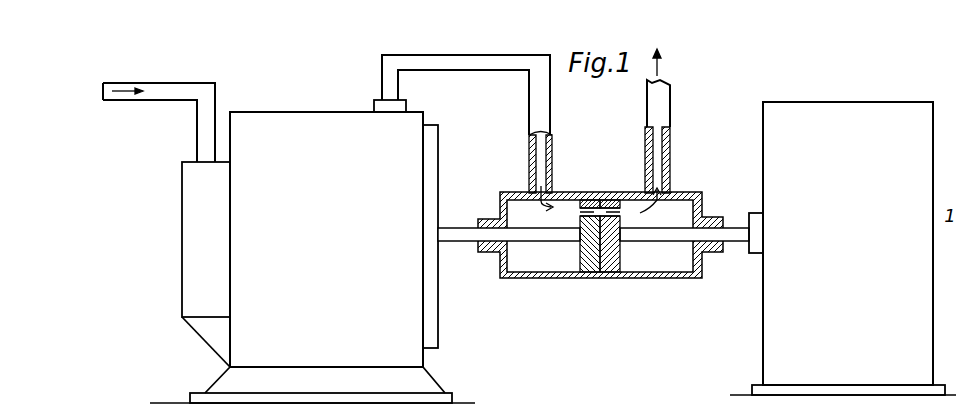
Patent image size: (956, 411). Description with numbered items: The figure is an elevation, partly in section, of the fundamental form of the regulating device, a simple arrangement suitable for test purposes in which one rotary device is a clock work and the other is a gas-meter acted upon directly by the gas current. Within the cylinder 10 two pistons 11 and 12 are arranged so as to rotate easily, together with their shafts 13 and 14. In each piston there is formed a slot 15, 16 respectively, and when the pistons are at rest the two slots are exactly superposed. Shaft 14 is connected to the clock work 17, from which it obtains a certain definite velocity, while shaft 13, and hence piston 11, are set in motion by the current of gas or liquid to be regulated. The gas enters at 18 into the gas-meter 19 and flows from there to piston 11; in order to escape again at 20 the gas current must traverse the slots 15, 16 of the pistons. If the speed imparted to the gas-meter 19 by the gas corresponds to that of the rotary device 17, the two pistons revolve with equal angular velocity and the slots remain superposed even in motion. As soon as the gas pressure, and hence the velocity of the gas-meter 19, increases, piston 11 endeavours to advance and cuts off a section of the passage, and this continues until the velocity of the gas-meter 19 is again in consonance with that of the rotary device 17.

The cylinder 10 is at (543, 280).
The piston 11 is at (586, 196).
The piston 12 is at (611, 196).
The shaft 13 is at (455, 235).
The shaft 14 is at (725, 228).
The slot 15 is at (577, 217).
The slot 16 is at (626, 213).
The clock work 17 is at (847, 248).
The gas inlet 18 is at (186, 90).
The gas-meter 19 is at (366, 229).
The gas outlet 20 is at (662, 101).